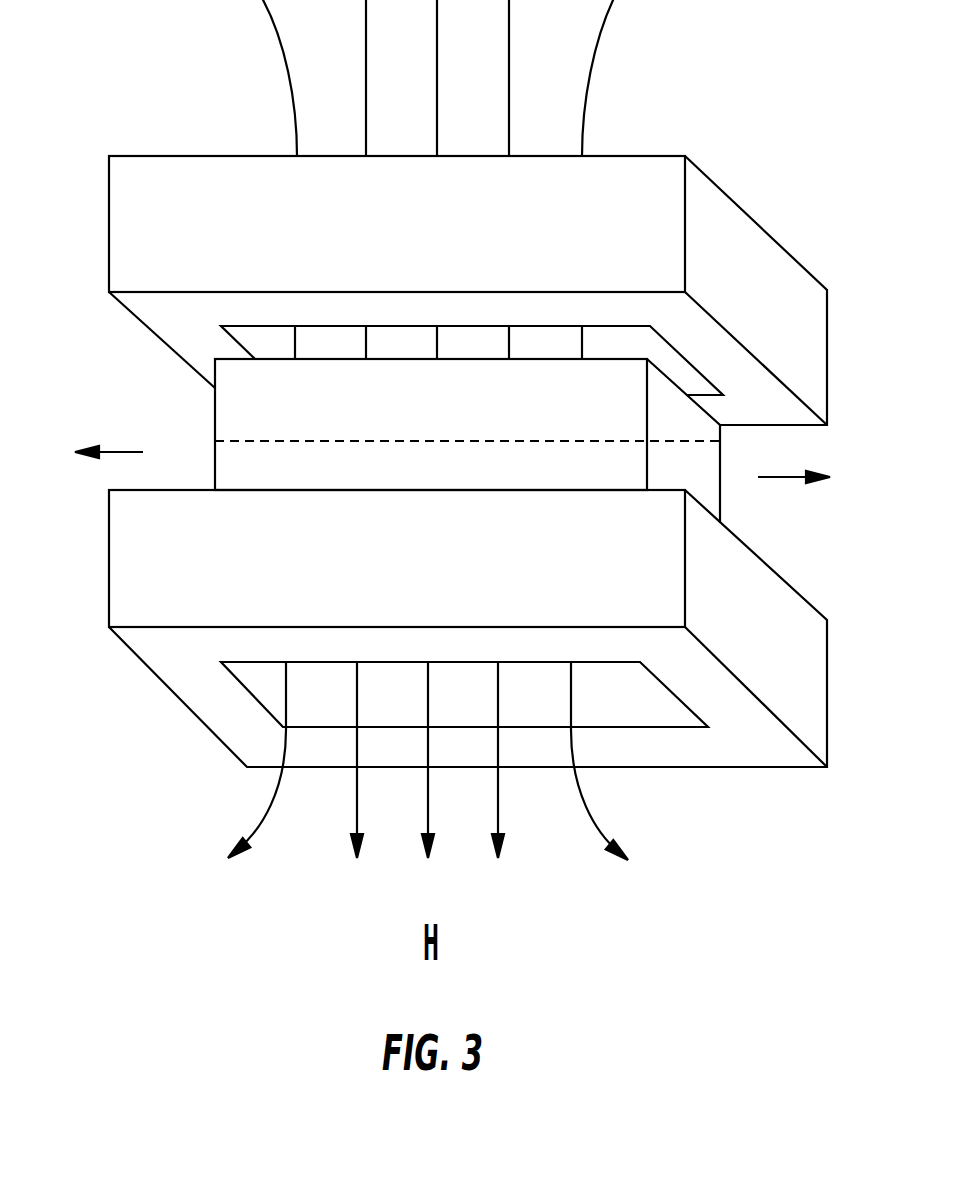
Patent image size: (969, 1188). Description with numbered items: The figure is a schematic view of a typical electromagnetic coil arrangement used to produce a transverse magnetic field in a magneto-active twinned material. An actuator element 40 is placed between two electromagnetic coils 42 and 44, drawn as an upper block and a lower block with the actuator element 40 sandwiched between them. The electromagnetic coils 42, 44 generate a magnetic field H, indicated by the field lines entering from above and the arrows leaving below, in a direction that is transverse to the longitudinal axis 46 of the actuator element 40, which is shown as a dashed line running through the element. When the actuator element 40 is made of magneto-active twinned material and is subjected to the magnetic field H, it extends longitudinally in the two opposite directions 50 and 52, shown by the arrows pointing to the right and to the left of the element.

The actuator element 40 is at (238, 410).
The electromagnetic coil 42 is at (770, 257).
The electromagnetic coil 44 is at (800, 632).
The longitudinal axis 46 is at (498, 441).
The direction 50 is at (777, 478).
The direction 52 is at (113, 453).